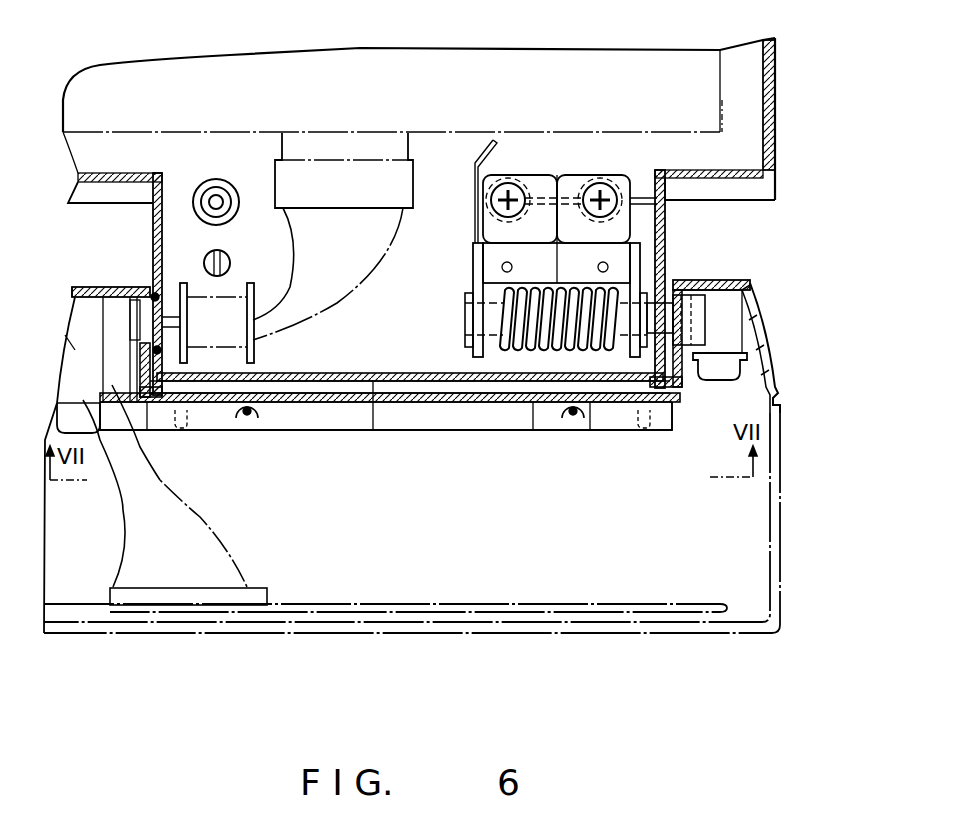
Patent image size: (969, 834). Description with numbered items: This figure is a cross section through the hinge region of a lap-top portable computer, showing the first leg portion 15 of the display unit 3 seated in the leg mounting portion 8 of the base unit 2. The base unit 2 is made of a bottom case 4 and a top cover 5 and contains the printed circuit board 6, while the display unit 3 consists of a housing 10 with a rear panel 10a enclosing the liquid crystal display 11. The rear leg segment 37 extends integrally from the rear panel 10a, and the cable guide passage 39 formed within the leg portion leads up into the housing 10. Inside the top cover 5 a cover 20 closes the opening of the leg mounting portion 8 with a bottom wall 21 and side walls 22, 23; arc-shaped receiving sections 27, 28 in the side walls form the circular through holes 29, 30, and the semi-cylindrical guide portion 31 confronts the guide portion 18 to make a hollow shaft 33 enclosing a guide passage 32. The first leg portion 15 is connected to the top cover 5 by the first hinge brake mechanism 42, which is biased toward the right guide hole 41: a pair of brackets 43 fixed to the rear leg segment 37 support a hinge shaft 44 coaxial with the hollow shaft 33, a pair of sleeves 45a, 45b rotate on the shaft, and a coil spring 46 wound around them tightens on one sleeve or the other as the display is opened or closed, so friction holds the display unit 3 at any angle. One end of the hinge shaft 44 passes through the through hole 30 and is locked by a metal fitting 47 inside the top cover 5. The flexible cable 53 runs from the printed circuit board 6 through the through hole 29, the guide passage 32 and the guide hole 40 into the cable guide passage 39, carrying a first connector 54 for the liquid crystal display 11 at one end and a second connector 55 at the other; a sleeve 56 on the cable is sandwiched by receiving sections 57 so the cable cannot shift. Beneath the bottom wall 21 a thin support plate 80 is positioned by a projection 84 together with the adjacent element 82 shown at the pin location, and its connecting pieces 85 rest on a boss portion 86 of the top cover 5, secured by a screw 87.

The base unit 2 is at (834, 400).
The display unit 3 is at (782, 57).
The bottom case 4 is at (780, 498).
The top cover 5 is at (777, 388).
The printed circuit board 6 is at (618, 604).
The leg mounting portion 8 is at (417, 388).
The housing 10 is at (523, 60).
The rear panel 10a is at (768, 97).
The liquid crystal display 11 is at (723, 110).
The first leg portion 15 is at (157, 264).
The guide portion 18 is at (68, 298).
The cover 20 is at (333, 405).
The bottom wall 21 is at (477, 400).
The side wall 22 is at (138, 370).
The side wall 23 is at (668, 392).
The receiving section 27 is at (147, 325).
The receiving section 28 is at (703, 335).
The through hole 29 is at (140, 312).
The through hole 30 is at (710, 288).
The guide portion 31 is at (150, 397).
The guide passage 32 is at (156, 295).
The hollow shaft 33 is at (165, 328).
The rear leg segment 37 is at (375, 382).
The cable guide passage 39 is at (170, 232).
The guide hole 40 is at (150, 290).
The guide hole 41 is at (667, 288).
The first hinge brake mechanism 42 is at (594, 148).
The brackets 43 is at (541, 184).
The hinge shaft 44 is at (680, 325).
The sleeve 45a is at (473, 318).
The sleeve 45b is at (615, 360).
The coil spring 46 is at (517, 307).
The metal fitting 47 is at (717, 363).
The flexible cable 53 is at (220, 540).
The first connector 54 is at (412, 190).
The second connector 55 is at (187, 598).
The sleeve 56 is at (242, 300).
The receiving section 57 is at (265, 320).
The support plate 80 is at (517, 422).
The locating pin 82 is at (247, 418).
The projection 84 is at (192, 428).
The connecting pieces 85 is at (63, 410).
The boss portion 86 is at (72, 345).
The screw 87 is at (70, 431).